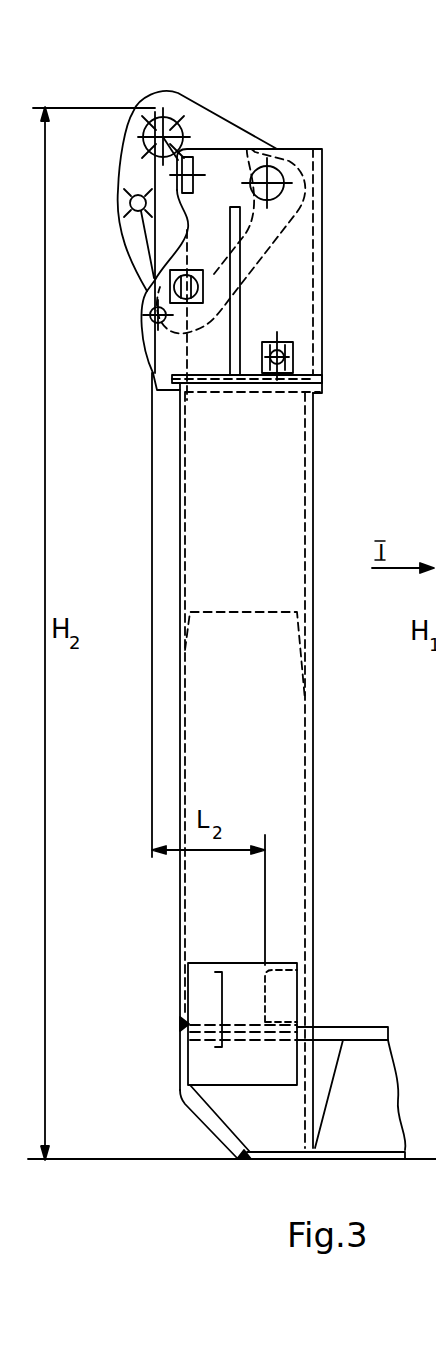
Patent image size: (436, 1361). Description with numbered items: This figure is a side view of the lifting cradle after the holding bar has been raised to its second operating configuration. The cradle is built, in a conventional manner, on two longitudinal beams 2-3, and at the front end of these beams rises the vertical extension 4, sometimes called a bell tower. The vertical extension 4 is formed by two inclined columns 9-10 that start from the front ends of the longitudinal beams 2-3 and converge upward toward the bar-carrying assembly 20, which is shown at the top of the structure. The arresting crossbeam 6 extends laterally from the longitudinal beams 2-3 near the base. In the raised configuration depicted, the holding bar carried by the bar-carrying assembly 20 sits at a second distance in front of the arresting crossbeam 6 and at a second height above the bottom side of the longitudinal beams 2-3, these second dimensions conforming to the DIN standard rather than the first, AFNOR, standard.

The bar-carrying assembly 20 is at (326, 102).
The vertical extension 4 is at (301, 765).
The inclined columns 9-10 is at (313, 812).
The arresting crossbeam 6 is at (266, 974).
The longitudinal beams 2-3 is at (360, 1021).